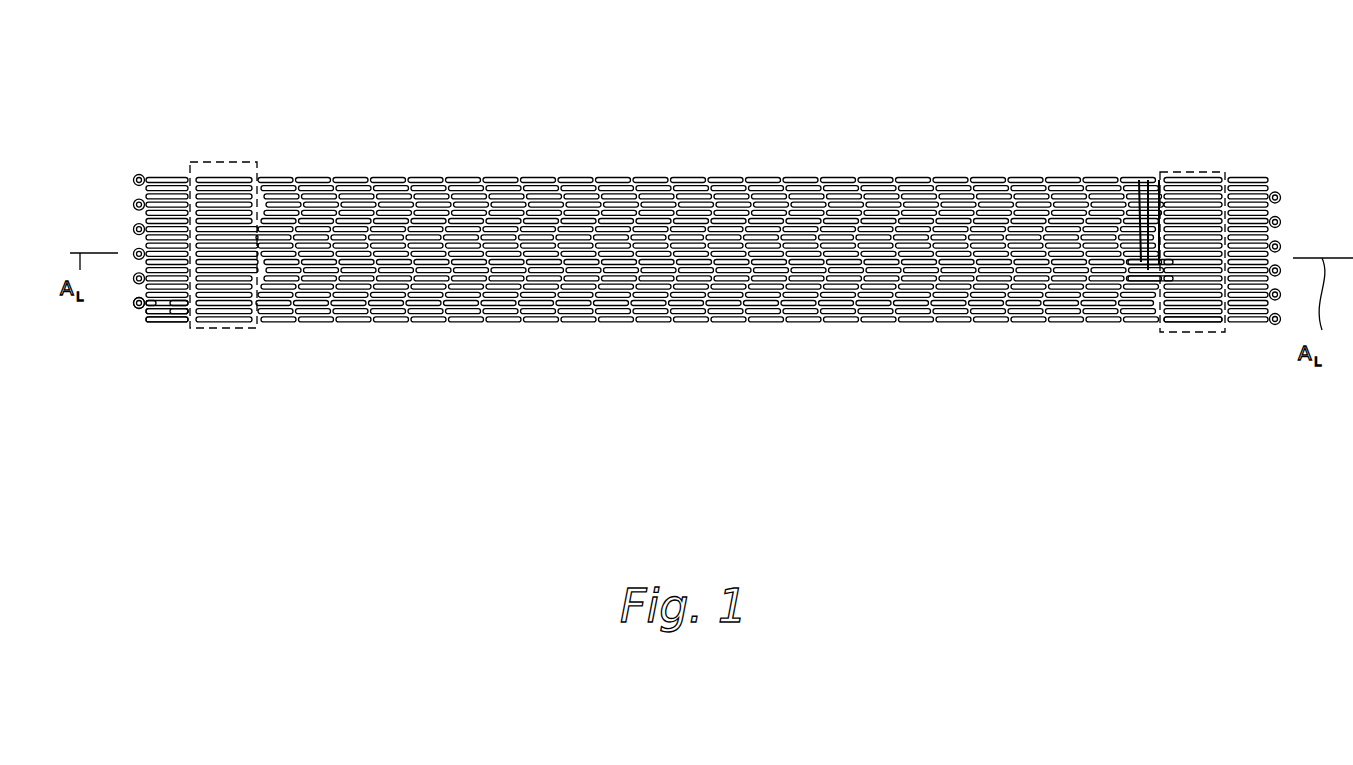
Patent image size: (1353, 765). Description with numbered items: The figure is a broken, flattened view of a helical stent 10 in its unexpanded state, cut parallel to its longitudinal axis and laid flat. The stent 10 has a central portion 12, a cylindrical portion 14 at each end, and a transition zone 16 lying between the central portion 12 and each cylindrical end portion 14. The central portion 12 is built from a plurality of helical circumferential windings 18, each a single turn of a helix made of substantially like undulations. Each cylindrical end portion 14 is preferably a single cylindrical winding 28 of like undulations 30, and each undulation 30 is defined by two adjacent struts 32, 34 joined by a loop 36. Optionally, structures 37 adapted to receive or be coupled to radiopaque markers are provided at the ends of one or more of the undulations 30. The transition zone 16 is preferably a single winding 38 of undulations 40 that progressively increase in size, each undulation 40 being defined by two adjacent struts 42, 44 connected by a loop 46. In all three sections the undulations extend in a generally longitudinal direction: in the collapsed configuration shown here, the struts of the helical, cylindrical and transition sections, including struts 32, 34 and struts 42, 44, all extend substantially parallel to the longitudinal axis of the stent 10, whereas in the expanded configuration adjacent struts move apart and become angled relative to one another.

The stent 10 is at (874, 42).
The central portion 12 is at (710, 246).
The cylindrical portion 14 is at (160, 156).
The transition zone 16 is at (216, 150).
The helical circumferential windings 18 is at (504, 282).
The cylindrical winding 28 is at (162, 325).
The undulations 30 is at (144, 308).
The strut 32 is at (177, 312).
The strut 34 is at (181, 310).
The loop 36 is at (149, 314).
The structures for radiopaque markers 37 is at (133, 297).
The winding 38 is at (1185, 328).
The undulations 40 is at (1133, 268).
The strut 42 is at (1148, 180).
The strut 44 is at (1159, 180).
The loop 46 is at (1139, 180).